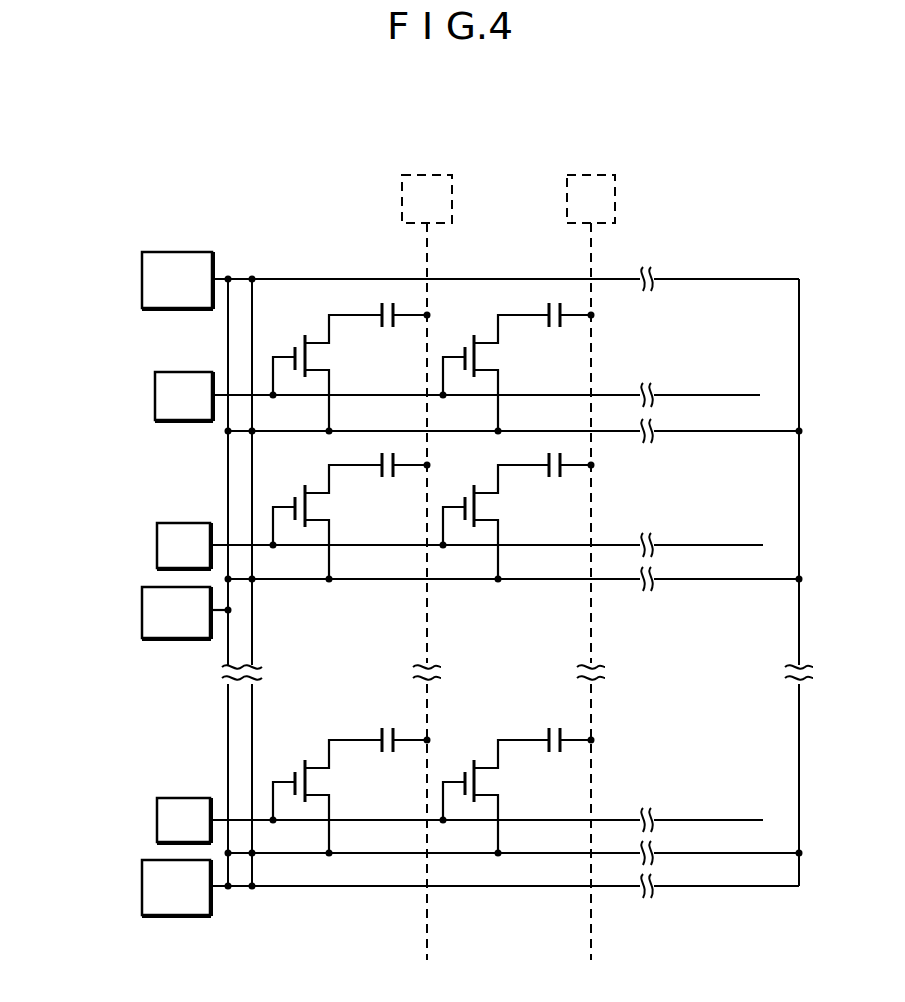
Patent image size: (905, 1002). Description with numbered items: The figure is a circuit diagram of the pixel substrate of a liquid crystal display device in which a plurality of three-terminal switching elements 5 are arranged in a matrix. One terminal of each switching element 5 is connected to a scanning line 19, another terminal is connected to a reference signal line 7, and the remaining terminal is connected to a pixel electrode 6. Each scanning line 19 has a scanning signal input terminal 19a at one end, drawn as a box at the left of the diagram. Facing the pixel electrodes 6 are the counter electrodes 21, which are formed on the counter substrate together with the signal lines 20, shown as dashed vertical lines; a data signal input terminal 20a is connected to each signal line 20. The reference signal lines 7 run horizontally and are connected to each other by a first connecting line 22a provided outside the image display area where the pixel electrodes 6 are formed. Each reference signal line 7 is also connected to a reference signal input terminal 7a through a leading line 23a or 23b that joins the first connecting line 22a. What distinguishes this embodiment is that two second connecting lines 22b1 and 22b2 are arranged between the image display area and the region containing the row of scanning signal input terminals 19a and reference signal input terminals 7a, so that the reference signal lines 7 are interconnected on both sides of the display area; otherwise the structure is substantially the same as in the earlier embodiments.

The three-terminal switching element 5 is at (295, 350).
The pixel electrode 6 is at (379, 303).
The reference signal line 7 is at (303, 432).
The reference signal input terminal 7a is at (180, 252).
The scanning line 19 is at (213, 393).
The scanning signal input terminal 19a is at (155, 375).
The signal line 20 is at (430, 250).
The data signal input terminal 20a is at (423, 170).
The counter electrode 21 is at (396, 300).
The first connecting line 22a is at (799, 493).
The second connecting line 22b1 is at (228, 525).
The second connecting line 22b2 is at (250, 446).
The leading line 23a is at (280, 278).
The leading line 23b is at (327, 888).